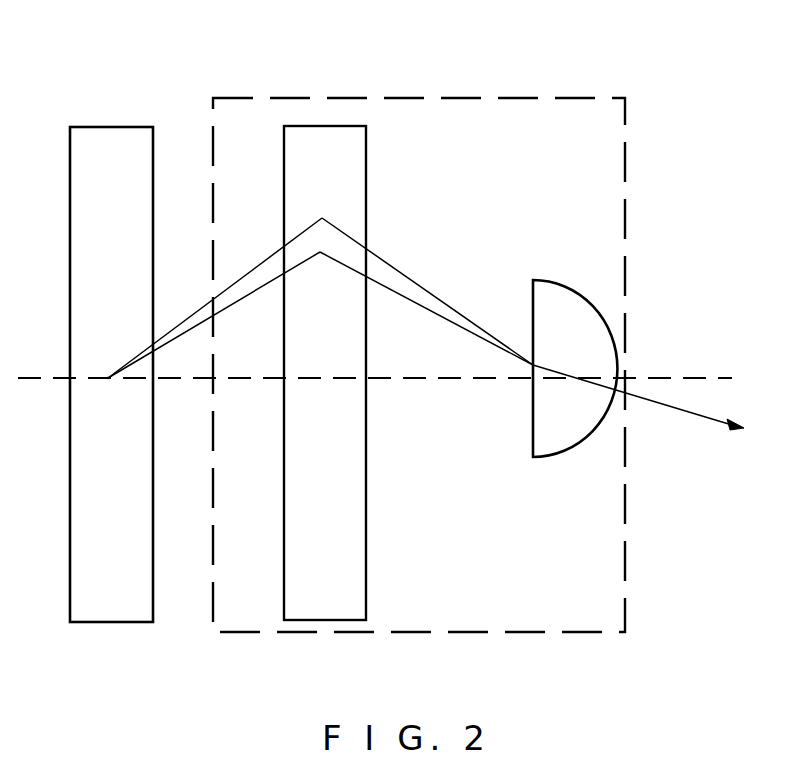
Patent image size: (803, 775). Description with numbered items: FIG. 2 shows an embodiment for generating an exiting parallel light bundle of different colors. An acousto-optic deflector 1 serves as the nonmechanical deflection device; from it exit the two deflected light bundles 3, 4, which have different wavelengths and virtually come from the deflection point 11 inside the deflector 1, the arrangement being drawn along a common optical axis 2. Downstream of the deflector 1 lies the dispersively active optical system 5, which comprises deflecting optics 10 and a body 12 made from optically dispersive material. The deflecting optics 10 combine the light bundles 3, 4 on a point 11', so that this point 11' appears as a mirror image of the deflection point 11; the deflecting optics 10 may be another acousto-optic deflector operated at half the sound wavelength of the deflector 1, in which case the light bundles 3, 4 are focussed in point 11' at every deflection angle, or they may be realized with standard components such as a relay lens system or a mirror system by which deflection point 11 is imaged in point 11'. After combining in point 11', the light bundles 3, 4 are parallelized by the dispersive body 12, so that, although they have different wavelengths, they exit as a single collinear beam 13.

The acousto-optic deflector 1 is at (78, 610).
The optical axis 2 is at (714, 378).
The deflected light bundle 3 is at (172, 326).
The deflected light bundle 4 is at (178, 340).
The dispersively active optical system 5 is at (604, 129).
The deflecting optics 10 is at (338, 148).
The deflection point 11 is at (101, 338).
The point 11' is at (514, 327).
The body made from optically dispersive material 12 is at (560, 298).
The collinear beam 13 is at (683, 410).